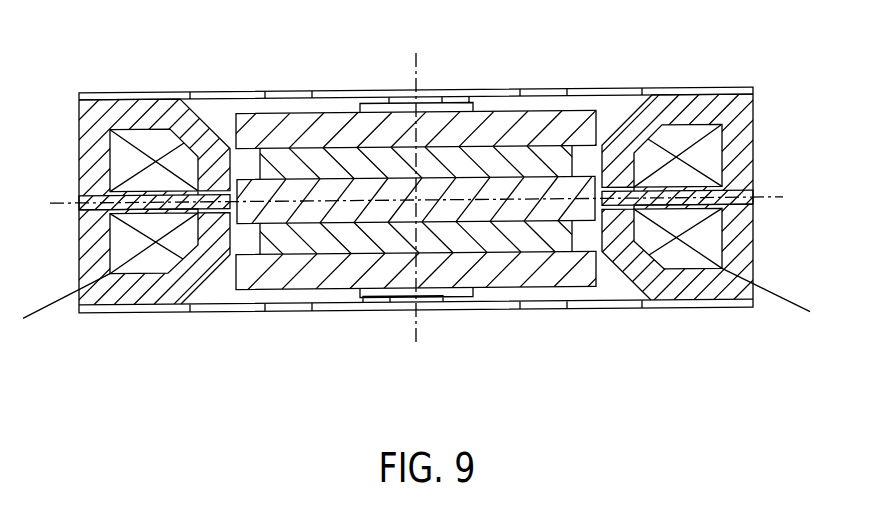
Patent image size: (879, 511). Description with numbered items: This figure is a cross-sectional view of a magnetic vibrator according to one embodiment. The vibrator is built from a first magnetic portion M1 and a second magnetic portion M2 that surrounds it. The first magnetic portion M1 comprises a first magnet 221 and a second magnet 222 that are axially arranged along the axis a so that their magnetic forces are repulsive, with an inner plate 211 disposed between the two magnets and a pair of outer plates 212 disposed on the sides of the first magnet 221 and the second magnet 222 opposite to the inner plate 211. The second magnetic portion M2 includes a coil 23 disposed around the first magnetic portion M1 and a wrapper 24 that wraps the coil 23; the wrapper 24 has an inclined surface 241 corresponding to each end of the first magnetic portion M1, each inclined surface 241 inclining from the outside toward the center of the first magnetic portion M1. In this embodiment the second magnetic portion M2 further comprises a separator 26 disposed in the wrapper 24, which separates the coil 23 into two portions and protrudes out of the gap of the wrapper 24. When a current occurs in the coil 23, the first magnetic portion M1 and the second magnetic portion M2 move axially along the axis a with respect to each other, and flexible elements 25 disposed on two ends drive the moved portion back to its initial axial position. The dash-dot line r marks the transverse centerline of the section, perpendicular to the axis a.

The inner plate 211 is at (278, 190).
The outer plates 212 is at (345, 132).
The first magnet 221 is at (521, 162).
The second magnet 222 is at (283, 240).
The coil 23 is at (678, 132).
The wrapper 24 is at (703, 284).
The inclined surface 241 is at (630, 113).
The flexible elements 25 is at (438, 308).
The separator 26 is at (178, 196).
The first magnetic portion M1 is at (451, 74).
The second magnetic portion M2 is at (657, 333).
The axis a is at (414, 185).
The radial axis r is at (423, 195).